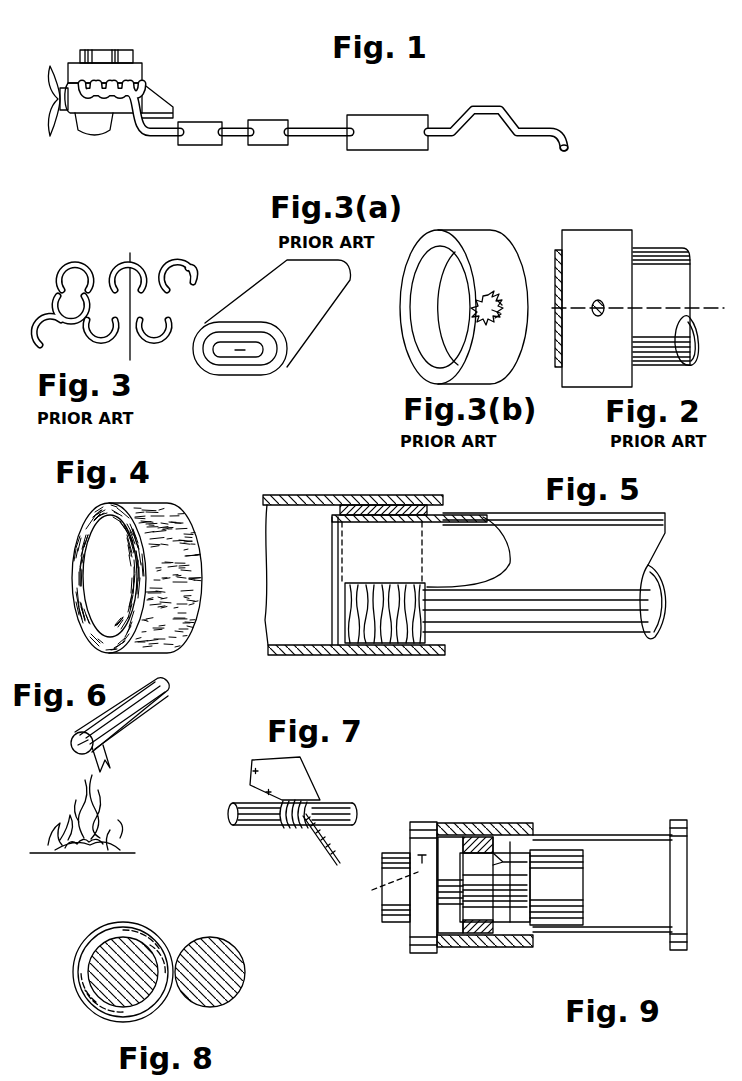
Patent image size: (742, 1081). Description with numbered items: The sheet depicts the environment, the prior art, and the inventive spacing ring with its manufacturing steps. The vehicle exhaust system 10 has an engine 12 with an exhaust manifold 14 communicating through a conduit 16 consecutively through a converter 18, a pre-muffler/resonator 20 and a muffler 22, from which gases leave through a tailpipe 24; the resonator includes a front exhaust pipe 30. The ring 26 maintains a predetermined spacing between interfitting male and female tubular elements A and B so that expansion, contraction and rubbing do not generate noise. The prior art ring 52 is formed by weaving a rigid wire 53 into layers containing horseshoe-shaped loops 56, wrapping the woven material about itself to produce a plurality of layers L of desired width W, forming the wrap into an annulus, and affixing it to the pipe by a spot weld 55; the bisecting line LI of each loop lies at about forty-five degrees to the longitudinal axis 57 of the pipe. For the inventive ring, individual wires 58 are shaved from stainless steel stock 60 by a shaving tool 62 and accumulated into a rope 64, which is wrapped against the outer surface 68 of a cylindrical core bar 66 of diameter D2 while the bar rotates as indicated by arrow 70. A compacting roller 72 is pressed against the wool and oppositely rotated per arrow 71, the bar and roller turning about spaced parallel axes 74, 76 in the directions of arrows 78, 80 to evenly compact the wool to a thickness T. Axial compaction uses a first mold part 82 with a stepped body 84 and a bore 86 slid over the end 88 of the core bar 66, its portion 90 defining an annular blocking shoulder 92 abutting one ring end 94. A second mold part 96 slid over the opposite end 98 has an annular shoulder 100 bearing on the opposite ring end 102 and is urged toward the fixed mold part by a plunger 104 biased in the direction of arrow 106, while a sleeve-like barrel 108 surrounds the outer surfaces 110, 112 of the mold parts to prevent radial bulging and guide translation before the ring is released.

In FIG. 1, the vehicle exhaust system 10 is at (276, 88).
In FIG. 1, the engine 12 is at (148, 70).
In FIG. 1, the exhaust manifold 14 is at (104, 103).
In FIG. 1, the conduit 16 is at (163, 134).
In FIG. 1, the converter 18 is at (214, 133).
In FIG. 1, the pre-muffler/resonator 20 is at (299, 132).
In FIG. 1, the muffler 22 is at (387, 132).
In FIG. 1, the tailpipe 24 is at (520, 126).
In FIG. 4, the ring 26 is at (199, 508).
In FIG. 5, the ring 26 is at (397, 494).
In FIG. 9, the ring 26 is at (470, 948).
In FIG. 2, the front exhaust pipe 30 is at (666, 306).
In FIG. 3B, the prior art ring 52 is at (486, 246).
In FIG. 2, the prior art ring 52 is at (603, 224).
In FIG. 3, the wire 53 is at (170, 270).
In FIG. 2, the spot weld 55 is at (598, 300).
In FIG. 3, the horseshoe-shaped loops 56 is at (150, 272).
In FIG. 2, the longitudinal axis 57 is at (698, 307).
In FIG. 6, the wires/threads 58 is at (93, 807).
In FIG. 6, the stainless steel stock 60 is at (97, 732).
In FIG. 6, the shaving tool 62 is at (110, 758).
In FIG. 6, the rope 64 is at (108, 702).
In FIG. 7, the rope 64 is at (320, 848).
In FIG. 7, the core bar 66 is at (347, 807).
In FIG. 8, the core bar 66 is at (87, 972).
In FIG. 9, the core bar 66 is at (420, 893).
In FIG. 7, the outer surface 68 is at (260, 826).
In FIG. 7, the arrow 70 is at (216, 808).
In FIG. 7, the arrow 71 is at (334, 793).
In FIG. 7, the compacting roller 72 is at (328, 794).
In FIG. 8, the compacting roller 72 is at (230, 942).
In FIG. 8, the axis 74 is at (123, 970).
In FIG. 8, the axis 76 is at (211, 972).
In FIG. 8, the arrow 78 is at (165, 931).
In FIG. 8, the arrow 80 is at (182, 932).
In FIG. 9, the first mold part 82 is at (428, 823).
In FIG. 9, the stepped body 84 is at (423, 893).
In FIG. 9, the bore 86 is at (382, 887).
In FIG. 9, the end 88 is at (392, 848).
In FIG. 9, the portion 90 is at (448, 850).
In FIG. 9, the annular blocking shoulder 92 is at (477, 835).
In FIG. 9, the ring end 94 is at (452, 948).
In FIG. 9, the second mold part 96 is at (515, 948).
In FIG. 9, the opposite end 98 is at (568, 868).
In FIG. 9, the annular shoulder 100 is at (517, 842).
In FIG. 9, the opposite ring end 102 is at (507, 840).
In FIG. 9, the plunger 104 is at (655, 830).
In FIG. 9, the arrow 106 is at (601, 818).
In FIG. 9, the sleeve-like barrel 108 is at (538, 928).
In FIG. 9, the outer surface 110 is at (447, 950).
In FIG. 9, the outer surface 112 is at (500, 950).
In FIG. 3, the layers L is at (108, 250).
In FIG. 3A, the layers L is at (250, 355).
In FIG. 3, the line LI is at (130, 256).
In FIG. 3B, the line LI is at (470, 346).
In FIG. 2, the line LI is at (553, 347).
In FIG. 3A, the width W is at (375, 307).
In FIG. 3B, the width W is at (470, 307).
In FIG. 2, the width W is at (663, 373).
In FIG. 5, the male tubular element A is at (354, 575).
In FIG. 5, the female tubular element B is at (499, 576).
In FIG. 8, the thickness T is at (87, 928).
In FIG. 7, the diameter D2 is at (233, 866).